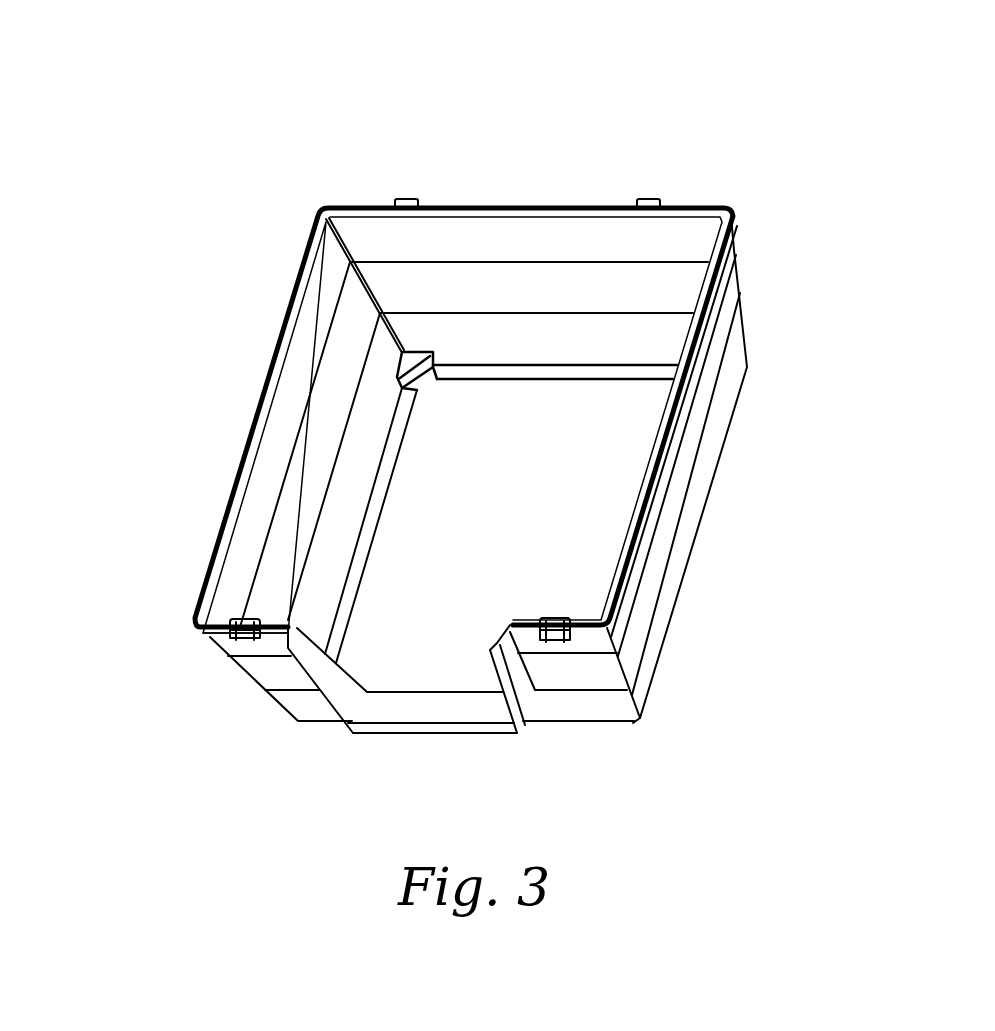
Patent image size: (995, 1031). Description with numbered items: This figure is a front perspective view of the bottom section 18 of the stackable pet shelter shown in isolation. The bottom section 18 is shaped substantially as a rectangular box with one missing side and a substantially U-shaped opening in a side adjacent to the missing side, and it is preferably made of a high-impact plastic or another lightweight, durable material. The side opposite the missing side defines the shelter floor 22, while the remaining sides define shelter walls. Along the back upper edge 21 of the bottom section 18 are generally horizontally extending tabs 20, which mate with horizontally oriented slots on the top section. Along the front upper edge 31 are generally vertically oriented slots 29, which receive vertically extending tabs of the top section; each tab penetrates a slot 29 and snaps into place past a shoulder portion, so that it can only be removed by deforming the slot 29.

The bottom section 18 is at (685, 472).
The tabs 20 is at (402, 197).
The back upper edge 21 is at (503, 198).
The shelter floor 22 is at (490, 410).
The slots 29 is at (240, 640).
The front upper edge 31 is at (193, 620).